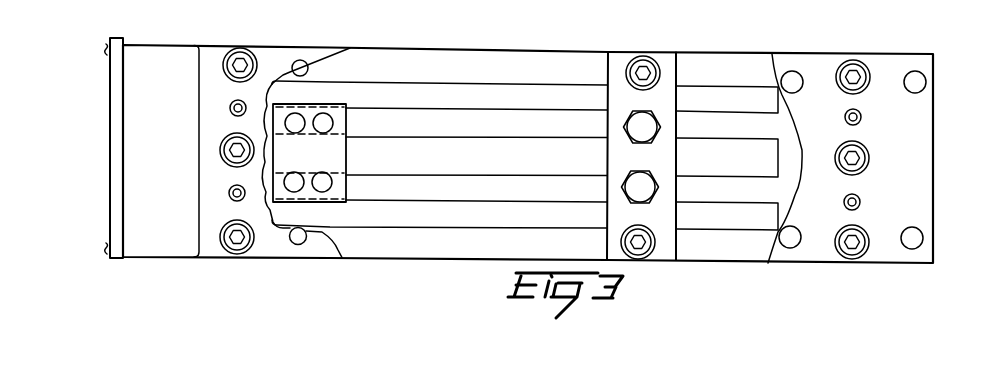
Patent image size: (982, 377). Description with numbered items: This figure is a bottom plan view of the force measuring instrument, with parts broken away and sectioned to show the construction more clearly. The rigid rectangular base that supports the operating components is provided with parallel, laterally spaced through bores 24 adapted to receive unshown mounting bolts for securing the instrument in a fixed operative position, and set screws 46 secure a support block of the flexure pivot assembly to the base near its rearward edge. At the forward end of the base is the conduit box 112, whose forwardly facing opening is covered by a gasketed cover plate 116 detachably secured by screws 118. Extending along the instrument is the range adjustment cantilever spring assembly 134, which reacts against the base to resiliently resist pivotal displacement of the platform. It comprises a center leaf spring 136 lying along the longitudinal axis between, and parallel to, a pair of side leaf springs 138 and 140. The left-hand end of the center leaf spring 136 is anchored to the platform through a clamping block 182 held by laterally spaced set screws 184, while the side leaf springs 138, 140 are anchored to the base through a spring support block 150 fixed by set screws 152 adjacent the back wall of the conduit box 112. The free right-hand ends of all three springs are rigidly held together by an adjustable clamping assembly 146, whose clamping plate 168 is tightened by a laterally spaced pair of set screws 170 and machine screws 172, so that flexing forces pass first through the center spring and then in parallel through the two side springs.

The through bores 24 is at (920, 80).
The set screws 46 is at (855, 77).
The conduit box 112 is at (153, 45).
The gasketed cover plate 116 is at (113, 41).
The screws 118 is at (107, 47).
The range adjustment cantilever spring assembly 134 is at (553, 71).
The center leaf spring 136 is at (738, 127).
The side leaf spring 138 is at (738, 72).
The side leaf spring 140 is at (737, 193).
The adjustable clamping assembly 146 is at (698, 38).
The spring support block 150 is at (272, 95).
The set screws 152 is at (240, 58).
The clamping plate 168 is at (607, 99).
The set screws 170 is at (642, 68).
The machine screws 172 is at (642, 120).
The clamping block 182 is at (346, 148).
The set screws 184 is at (302, 119).